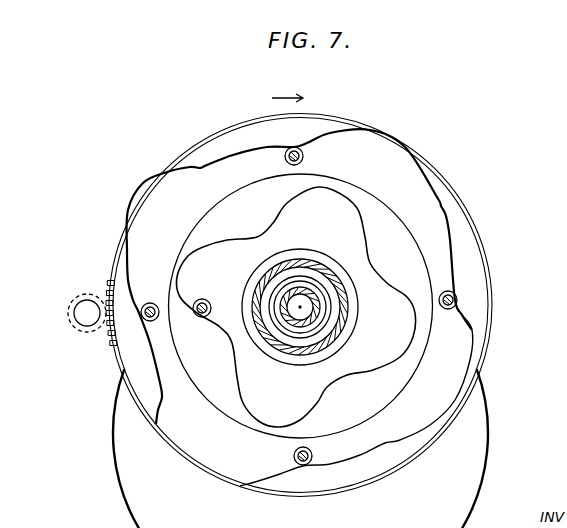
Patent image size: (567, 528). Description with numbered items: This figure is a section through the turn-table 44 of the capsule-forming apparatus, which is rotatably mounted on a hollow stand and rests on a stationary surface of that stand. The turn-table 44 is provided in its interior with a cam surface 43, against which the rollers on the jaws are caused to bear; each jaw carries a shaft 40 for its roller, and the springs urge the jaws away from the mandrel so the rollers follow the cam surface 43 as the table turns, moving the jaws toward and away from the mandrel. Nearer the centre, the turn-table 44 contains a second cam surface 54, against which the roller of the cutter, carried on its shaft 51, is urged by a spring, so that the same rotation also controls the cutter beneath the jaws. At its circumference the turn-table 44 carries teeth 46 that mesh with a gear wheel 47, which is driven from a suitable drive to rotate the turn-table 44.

The shaft 40 is at (298, 149).
The cam surface 43 is at (205, 172).
The turn-table 44 is at (447, 217).
The teeth 46 is at (108, 288).
The gear wheel 47 is at (88, 313).
The shaft 51 is at (196, 313).
The second cam surface 54 is at (238, 392).